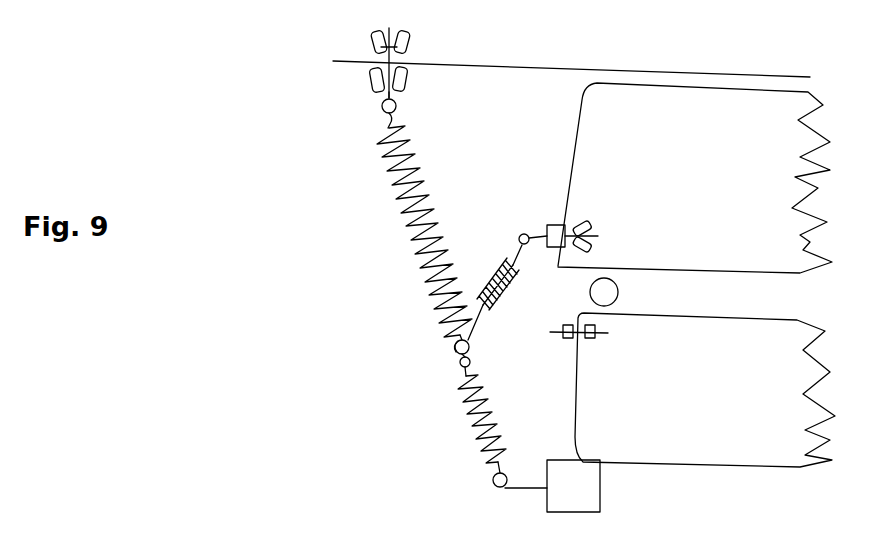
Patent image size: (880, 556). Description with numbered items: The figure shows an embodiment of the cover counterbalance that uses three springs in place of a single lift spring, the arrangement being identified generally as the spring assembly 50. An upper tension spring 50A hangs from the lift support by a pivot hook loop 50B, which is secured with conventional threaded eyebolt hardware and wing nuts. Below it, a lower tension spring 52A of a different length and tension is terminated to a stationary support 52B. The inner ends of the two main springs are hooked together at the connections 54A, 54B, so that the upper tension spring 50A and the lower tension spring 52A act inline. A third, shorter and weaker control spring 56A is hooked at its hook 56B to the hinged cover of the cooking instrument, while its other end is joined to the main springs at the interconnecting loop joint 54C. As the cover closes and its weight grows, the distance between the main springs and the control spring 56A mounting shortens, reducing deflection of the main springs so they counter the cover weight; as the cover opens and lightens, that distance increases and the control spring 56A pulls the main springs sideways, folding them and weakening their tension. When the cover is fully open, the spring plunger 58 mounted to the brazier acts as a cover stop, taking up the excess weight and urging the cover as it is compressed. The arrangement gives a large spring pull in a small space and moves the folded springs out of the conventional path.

The tensioning assembly 50 is at (400, 79).
The upper tension spring 50A is at (407, 210).
The pivot hook loop 50B is at (382, 110).
The lower tension spring 52A is at (482, 421).
The stationary support 52B is at (546, 489).
The hook connection 54A is at (456, 344).
The hook connection 54B is at (467, 371).
The interconnecting loop joint 54C is at (470, 338).
The control spring 56A is at (506, 302).
The hook 56B is at (528, 232).
The spring plunger 58 is at (590, 339).